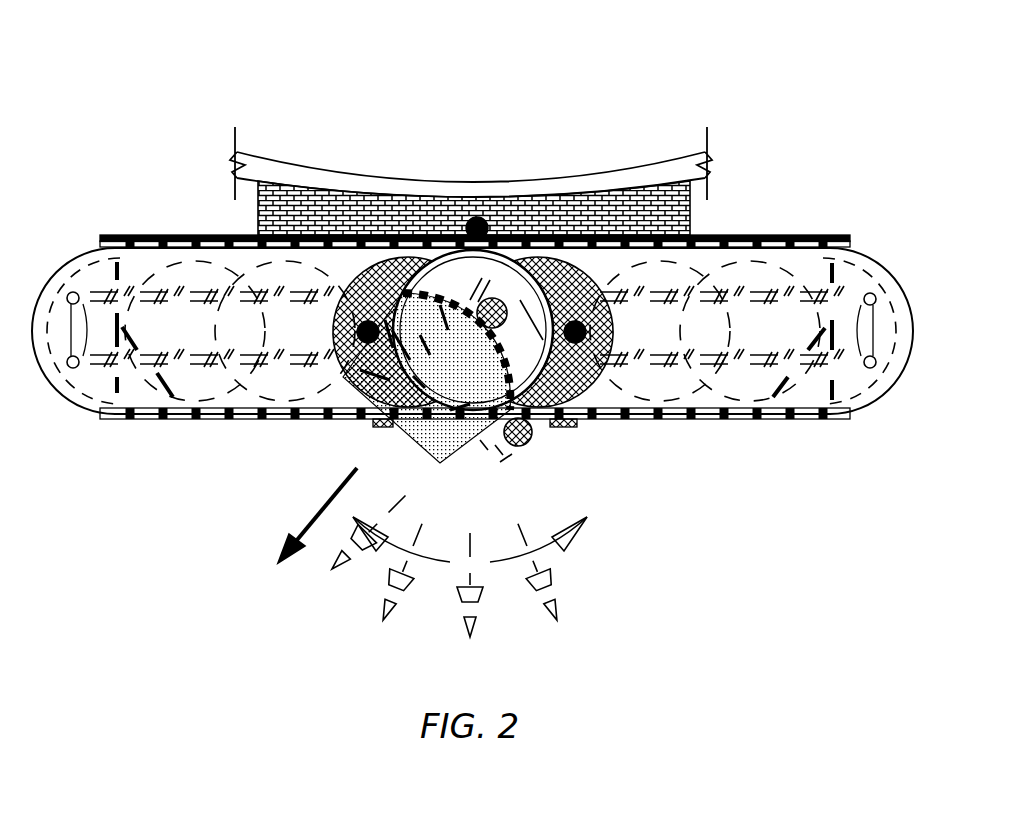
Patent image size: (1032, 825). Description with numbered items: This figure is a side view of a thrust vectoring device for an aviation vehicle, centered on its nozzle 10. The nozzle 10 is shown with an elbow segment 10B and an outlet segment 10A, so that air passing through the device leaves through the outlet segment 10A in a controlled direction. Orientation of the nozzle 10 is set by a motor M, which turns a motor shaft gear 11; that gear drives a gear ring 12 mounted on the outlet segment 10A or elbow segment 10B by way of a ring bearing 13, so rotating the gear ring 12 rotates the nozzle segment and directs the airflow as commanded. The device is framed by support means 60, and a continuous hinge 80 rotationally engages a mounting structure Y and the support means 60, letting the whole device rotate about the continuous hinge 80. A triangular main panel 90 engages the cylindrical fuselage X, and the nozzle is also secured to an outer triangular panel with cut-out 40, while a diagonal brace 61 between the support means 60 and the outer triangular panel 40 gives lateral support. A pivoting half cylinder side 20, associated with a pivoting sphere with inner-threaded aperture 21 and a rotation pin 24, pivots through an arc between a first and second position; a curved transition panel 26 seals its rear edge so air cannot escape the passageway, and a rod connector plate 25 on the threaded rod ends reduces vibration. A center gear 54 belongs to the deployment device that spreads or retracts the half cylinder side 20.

The nozzle 10 is at (330, 130).
The outlet segment 10A is at (462, 420).
The elbow segment 10B is at (560, 362).
The motor shaft gear 11 is at (466, 220).
The gear ring 12 is at (503, 222).
The ring bearing 13 is at (600, 310).
The pivoting half cylinder side 20 is at (870, 257).
The pivoting sphere with inner-threaded aperture 21 is at (73, 363).
The rotation pin 24 is at (548, 258).
The rod connector plate 25 is at (877, 340).
The curved transition panel 26 is at (615, 370).
The outer triangular panel with cut-out 40 is at (228, 419).
The center gear 54 is at (73, 298).
The support means 60 is at (113, 280).
The diagonal brace 61 is at (167, 380).
The continuous hinge 80 is at (832, 257).
The triangular main panel 90 is at (783, 243).
The motor M is at (478, 215).
The cylindrical fuselage X is at (397, 193).
The mounting structure Y is at (255, 218).